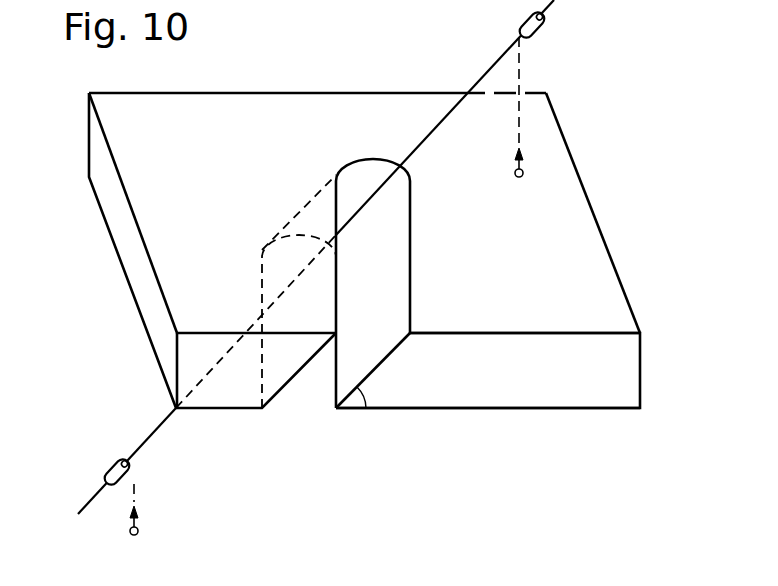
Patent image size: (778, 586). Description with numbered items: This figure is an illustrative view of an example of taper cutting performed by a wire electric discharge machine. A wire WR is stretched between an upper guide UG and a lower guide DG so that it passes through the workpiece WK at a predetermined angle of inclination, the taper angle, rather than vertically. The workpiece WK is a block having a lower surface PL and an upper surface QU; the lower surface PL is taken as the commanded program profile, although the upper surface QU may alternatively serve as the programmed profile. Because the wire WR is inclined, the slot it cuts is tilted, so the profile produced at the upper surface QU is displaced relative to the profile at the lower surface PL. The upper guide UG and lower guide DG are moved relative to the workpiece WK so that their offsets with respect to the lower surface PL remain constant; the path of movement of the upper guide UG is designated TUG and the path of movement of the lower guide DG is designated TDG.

The workpiece WK is at (612, 370).
The wire WR is at (145, 445).
The upper guide UG is at (558, 25).
The lower guide DG is at (96, 469).
The path of movement of the upper guide TUG is at (519, 130).
The path of movement of the lower guide TDG is at (137, 500).
The lower surface of the workpiece PL is at (500, 409).
The upper surface of the workpiece QU is at (590, 332).